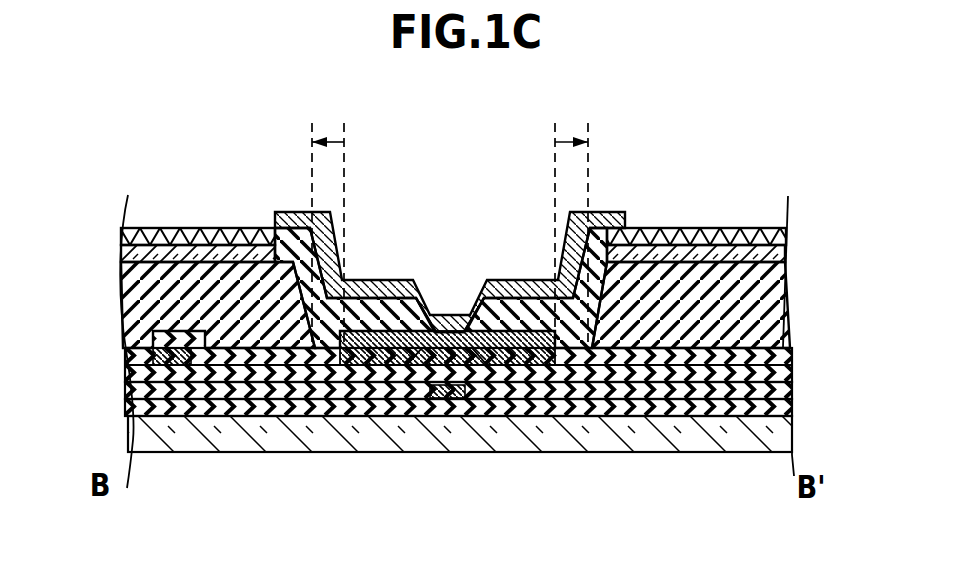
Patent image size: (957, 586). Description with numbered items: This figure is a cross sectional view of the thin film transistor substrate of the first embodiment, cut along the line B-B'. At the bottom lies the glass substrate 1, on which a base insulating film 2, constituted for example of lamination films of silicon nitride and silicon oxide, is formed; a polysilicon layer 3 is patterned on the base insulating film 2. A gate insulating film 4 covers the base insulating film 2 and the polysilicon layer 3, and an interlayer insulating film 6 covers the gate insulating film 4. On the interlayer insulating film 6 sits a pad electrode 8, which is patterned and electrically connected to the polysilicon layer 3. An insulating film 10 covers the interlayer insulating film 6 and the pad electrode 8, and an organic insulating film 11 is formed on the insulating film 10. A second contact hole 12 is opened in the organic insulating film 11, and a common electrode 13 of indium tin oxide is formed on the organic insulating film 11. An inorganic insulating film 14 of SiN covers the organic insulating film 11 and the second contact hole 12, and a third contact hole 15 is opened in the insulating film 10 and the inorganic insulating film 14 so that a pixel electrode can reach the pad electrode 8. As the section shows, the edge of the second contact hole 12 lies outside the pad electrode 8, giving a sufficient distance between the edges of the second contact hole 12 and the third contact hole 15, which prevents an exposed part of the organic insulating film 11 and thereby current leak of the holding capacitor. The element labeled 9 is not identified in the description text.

The glass substrate 1 is at (691, 422).
The base insulating film 2 is at (785, 416).
The polysilicon layer 3 is at (448, 393).
The gate insulating film 4 is at (785, 401).
The interlayer insulating film 6 is at (783, 380).
The pad electrode 8 is at (385, 354).
The electrode 9 is at (172, 358).
The insulating film 10 is at (783, 348).
The organic insulating film 11 is at (773, 267).
The second contact hole 12 is at (603, 297).
The common electrode 13 is at (773, 251).
The inorganic insulating film 14 is at (750, 230).
The third contact hole 15 is at (427, 307).